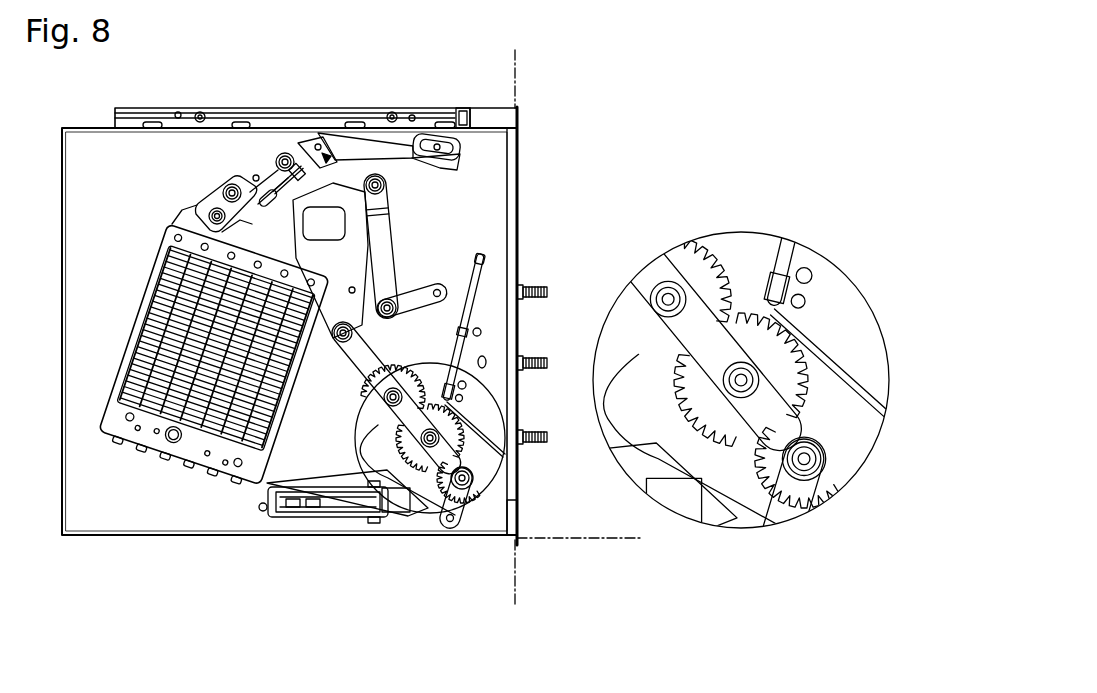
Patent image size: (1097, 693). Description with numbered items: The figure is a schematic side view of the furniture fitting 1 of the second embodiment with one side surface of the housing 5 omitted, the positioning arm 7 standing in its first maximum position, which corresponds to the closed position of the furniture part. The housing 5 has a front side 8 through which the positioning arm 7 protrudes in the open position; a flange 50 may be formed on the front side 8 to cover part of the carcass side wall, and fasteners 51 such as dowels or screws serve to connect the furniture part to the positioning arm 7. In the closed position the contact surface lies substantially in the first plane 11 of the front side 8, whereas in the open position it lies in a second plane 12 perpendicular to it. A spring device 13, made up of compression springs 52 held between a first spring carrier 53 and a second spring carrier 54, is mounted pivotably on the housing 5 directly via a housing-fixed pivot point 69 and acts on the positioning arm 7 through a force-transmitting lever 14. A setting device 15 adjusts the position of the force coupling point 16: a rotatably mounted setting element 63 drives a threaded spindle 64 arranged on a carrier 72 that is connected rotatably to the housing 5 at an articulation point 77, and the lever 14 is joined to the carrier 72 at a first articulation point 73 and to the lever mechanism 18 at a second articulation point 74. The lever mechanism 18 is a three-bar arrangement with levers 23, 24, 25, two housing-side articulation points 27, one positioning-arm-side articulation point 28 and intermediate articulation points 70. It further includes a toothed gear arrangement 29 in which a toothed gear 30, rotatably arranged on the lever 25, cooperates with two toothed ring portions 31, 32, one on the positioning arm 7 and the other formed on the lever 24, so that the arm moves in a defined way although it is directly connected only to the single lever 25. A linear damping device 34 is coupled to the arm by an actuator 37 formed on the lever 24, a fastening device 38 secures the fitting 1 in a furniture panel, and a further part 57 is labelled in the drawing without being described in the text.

The switching device 1 is at (593, 62).
The housing 5 is at (82, 147).
The actuating rod 7 is at (496, 274).
The housing wall 8 is at (521, 152).
The vertical axis 11 is at (518, 597).
The horizontal axis 12 is at (593, 548).
The contact module 13 is at (129, 250).
The connecting link 14 is at (386, 248).
The latch 15 is at (455, 165).
The pin 16 is at (270, 190).
The drive assembly 18 is at (339, 393).
The lever 23 is at (410, 300).
The gear segment housing 24 is at (392, 443).
The drive lever 25 is at (364, 358).
The hole 27 is at (438, 291).
The pivot bearing 28 is at (806, 462).
The support link 29 is at (471, 524).
The gear wheel 30 is at (752, 342).
The pinion 31 is at (808, 492).
The gear wheel 32 is at (693, 262).
The motor 34 is at (339, 534).
The coupling 37 is at (708, 503).
The mounting rail 38 is at (358, 88).
The stop block 50 is at (509, 500).
The screw 51 is at (541, 442).
The heat sink fins 52 is at (140, 345).
The mounting holes 53 is at (235, 240).
The base plate 54 is at (165, 438).
The frame plate 57 is at (104, 145).
The end block 63 is at (482, 172).
The bearing block 64 is at (290, 158).
The bushing 69 is at (185, 456).
The pivot lever 70 is at (341, 322).
The arm 72 is at (355, 182).
The pivot bearing 73 is at (386, 186).
The pivot bearing 74 is at (388, 318).
The bracket 77 is at (230, 182).